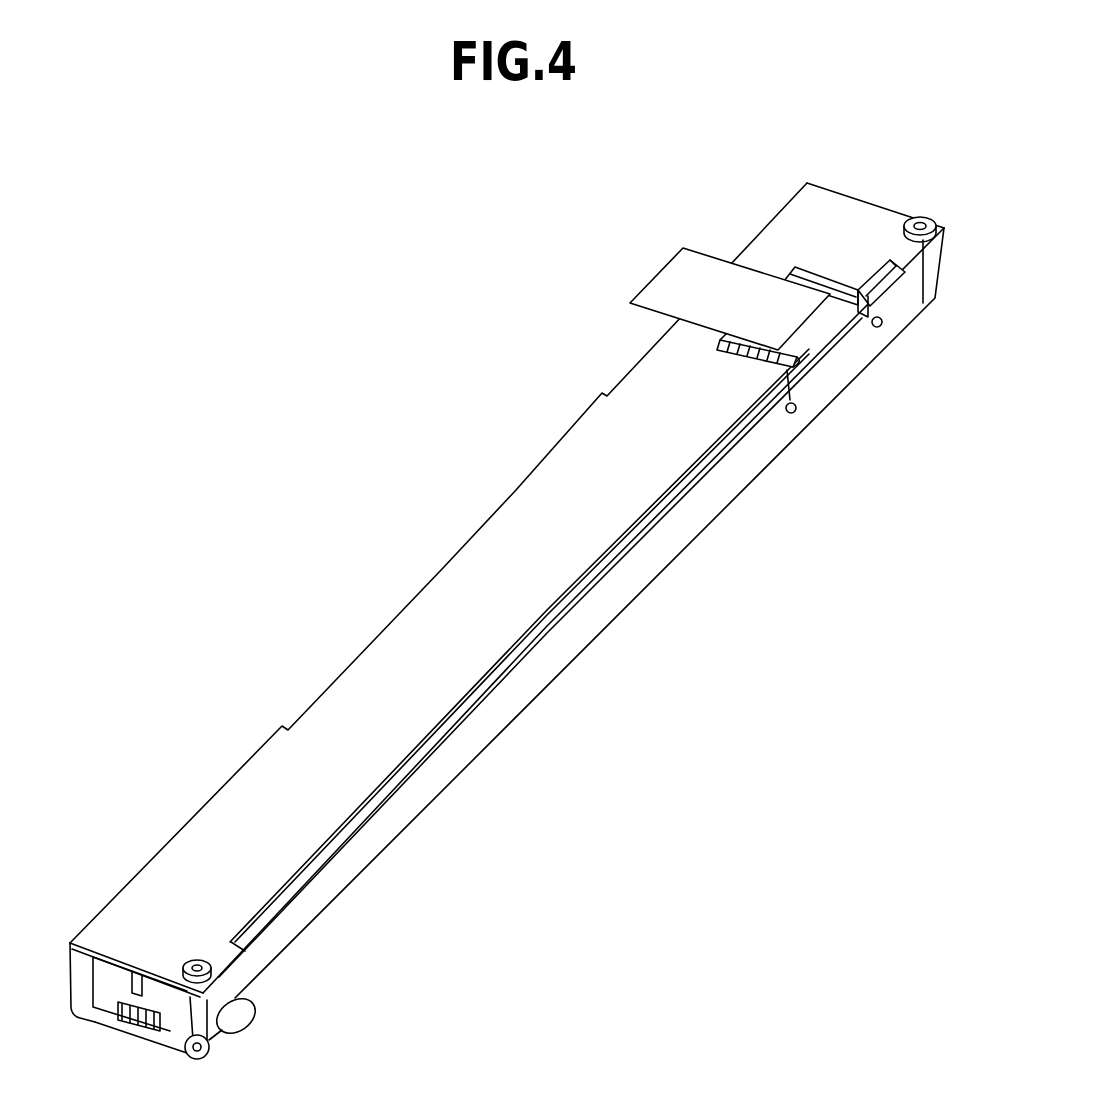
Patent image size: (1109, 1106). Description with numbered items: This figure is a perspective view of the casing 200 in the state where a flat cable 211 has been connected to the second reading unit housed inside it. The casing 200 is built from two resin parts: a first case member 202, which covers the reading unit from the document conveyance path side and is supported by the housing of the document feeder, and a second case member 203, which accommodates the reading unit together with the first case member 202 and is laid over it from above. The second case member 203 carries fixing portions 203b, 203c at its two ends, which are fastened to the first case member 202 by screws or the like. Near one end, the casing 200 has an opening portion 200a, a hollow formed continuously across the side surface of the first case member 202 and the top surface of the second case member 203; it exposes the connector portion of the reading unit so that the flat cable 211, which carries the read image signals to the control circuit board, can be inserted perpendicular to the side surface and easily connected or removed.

The casing 200 is at (284, 519).
The opening portion 200a is at (841, 369).
The first case member 202 is at (705, 507).
The second case member 203 is at (492, 550).
The fixing portion 203b is at (214, 970).
The fixing portion 203c is at (922, 216).
The flat cable 211 is at (670, 292).